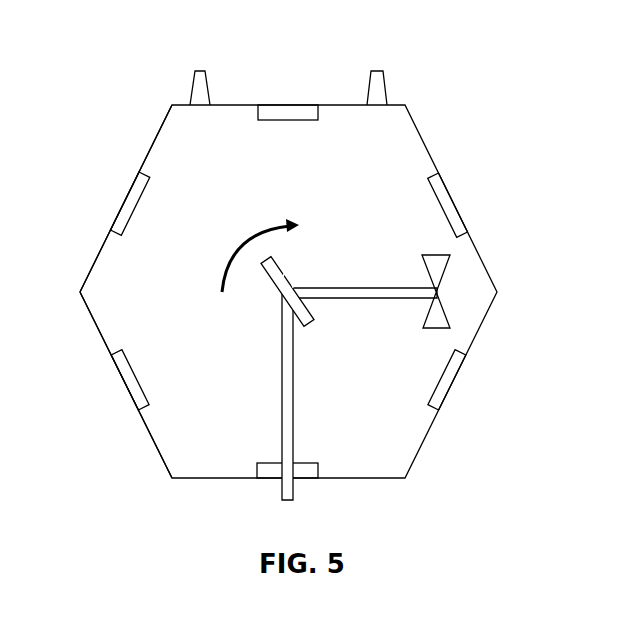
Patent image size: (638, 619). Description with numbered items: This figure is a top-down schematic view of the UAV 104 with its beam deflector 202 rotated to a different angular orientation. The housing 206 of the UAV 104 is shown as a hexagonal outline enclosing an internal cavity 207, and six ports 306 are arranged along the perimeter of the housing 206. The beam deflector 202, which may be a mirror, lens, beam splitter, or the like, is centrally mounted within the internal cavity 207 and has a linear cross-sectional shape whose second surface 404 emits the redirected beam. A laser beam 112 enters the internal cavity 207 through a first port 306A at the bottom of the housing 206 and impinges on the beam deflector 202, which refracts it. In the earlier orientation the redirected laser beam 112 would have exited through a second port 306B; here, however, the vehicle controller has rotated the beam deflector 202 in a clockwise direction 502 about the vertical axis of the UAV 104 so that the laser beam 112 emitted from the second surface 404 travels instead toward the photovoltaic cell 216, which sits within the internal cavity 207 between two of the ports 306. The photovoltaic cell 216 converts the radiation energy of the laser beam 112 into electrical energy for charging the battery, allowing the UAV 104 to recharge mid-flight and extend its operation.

The UAV 104 is at (98, 104).
The housing 206 is at (163, 118).
The internal cavity 207 is at (122, 314).
The second port 306B is at (457, 189).
The ports 306 is at (447, 398).
The first port 306A is at (311, 483).
The laser beam 112 is at (365, 298).
The photovoltaic cell 216 is at (445, 273).
The clockwise direction 502 is at (262, 262).
The beam deflector 202 is at (286, 268).
The second surface 404 is at (290, 277).